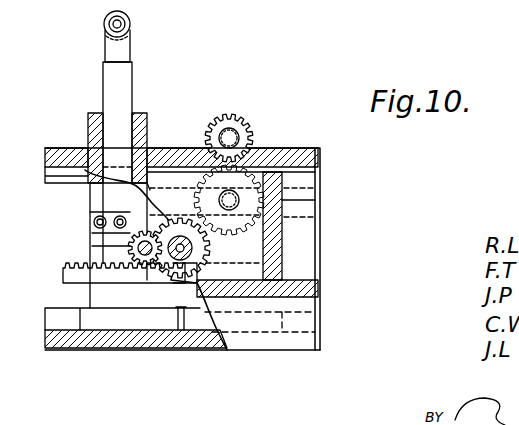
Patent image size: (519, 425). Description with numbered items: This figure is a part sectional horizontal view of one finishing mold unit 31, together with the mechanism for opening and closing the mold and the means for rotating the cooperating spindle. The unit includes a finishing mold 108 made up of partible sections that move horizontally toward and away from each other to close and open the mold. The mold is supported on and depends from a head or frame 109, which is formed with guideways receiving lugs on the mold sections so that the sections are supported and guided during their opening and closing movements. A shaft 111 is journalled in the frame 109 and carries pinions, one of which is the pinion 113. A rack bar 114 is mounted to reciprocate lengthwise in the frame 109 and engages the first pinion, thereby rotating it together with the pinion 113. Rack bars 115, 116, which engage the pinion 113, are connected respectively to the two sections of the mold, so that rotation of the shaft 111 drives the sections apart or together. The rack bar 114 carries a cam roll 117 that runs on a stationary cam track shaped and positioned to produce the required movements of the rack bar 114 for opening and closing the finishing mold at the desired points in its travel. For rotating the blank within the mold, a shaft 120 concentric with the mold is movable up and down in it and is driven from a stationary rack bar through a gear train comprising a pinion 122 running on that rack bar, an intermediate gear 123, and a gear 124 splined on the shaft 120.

The finishing mold unit 31 is at (331, 191).
The finishing mold 108 is at (220, 312).
The head or frame 109 is at (321, 292).
The shaft 111 is at (133, 250).
The pinion 113 is at (128, 243).
The rack bar 114 is at (117, 96).
The rack bar 115 is at (65, 270).
The rack bar 116 is at (105, 213).
The cam roll 117 is at (131, 24).
The shaft 120 is at (165, 284).
The pinion 122 is at (262, 104).
The intermediate gear 123 is at (264, 238).
The gear 124 is at (209, 246).